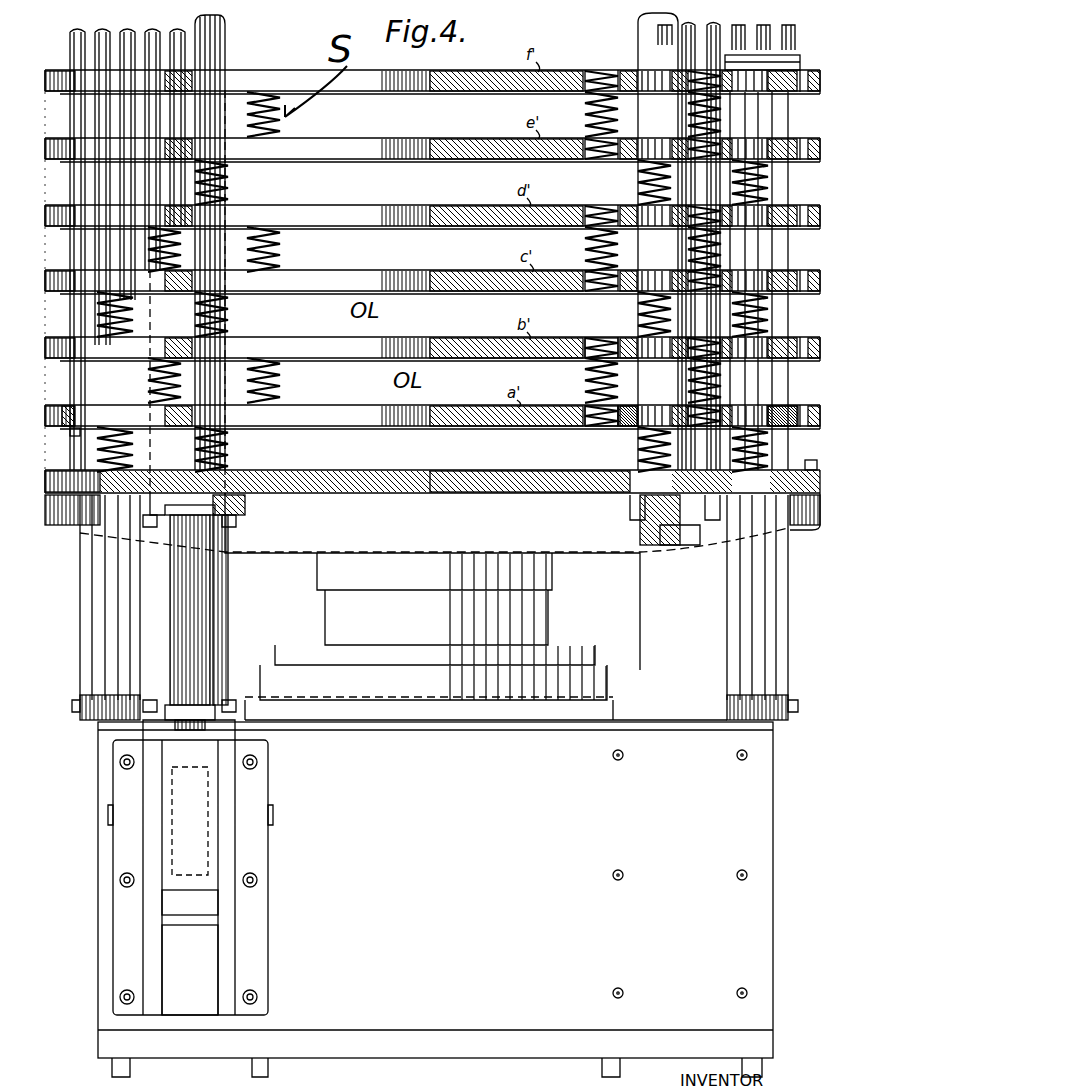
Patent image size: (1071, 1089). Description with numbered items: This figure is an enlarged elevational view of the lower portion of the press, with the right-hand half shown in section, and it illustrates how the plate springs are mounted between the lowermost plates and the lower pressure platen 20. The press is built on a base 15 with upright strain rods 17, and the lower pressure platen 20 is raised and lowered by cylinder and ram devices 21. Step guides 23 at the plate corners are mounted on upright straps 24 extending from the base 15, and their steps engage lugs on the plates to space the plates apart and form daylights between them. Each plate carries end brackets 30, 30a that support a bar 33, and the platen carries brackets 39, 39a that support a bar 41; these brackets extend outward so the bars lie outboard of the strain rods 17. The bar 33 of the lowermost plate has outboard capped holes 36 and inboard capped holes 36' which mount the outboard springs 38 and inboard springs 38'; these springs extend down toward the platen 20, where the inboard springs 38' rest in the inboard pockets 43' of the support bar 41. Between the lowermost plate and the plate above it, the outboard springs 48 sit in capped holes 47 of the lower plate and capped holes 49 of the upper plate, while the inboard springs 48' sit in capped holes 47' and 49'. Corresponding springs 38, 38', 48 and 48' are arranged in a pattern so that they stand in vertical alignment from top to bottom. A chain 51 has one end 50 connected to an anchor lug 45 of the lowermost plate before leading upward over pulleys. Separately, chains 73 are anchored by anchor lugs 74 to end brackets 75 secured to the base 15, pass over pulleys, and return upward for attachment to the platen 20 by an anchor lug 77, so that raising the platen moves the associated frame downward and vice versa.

The base 15 is at (474, 831).
The upright strain rods 17 is at (226, 46).
The lower pressure platen 20 is at (385, 527).
The cylinder and ram devices 21 is at (318, 604).
The step guides 23 is at (105, 572).
The upright straps 24 is at (80, 620).
The end bracket 30 is at (808, 130).
The end bracket 30a is at (58, 138).
The bar 33 is at (465, 138).
The outboard capped holes 36 is at (788, 401).
The inboard capped holes 36' is at (626, 401).
The outboard springs 38 is at (430, 316).
The inboard springs 38' is at (433, 316).
The bracket 39 is at (808, 525).
The bracket 39a is at (75, 525).
The bar 41 is at (505, 493).
The inboard pockets 43' is at (656, 520).
The anchor lug 45 is at (76, 414).
The capped holes 47 is at (686, 401).
The capped holes 47' is at (581, 402).
The outboard springs 48 is at (418, 247).
The inboard springs 48' is at (432, 248).
The capped holes 49 is at (692, 332).
The capped holes 49' is at (585, 333).
The chain end 50 is at (70, 434).
The chain 51 is at (70, 312).
The chains 73 is at (200, 600).
The anchor lugs 74 is at (210, 730).
The end brackets 75 is at (235, 787).
The anchor lug 77 is at (240, 510).